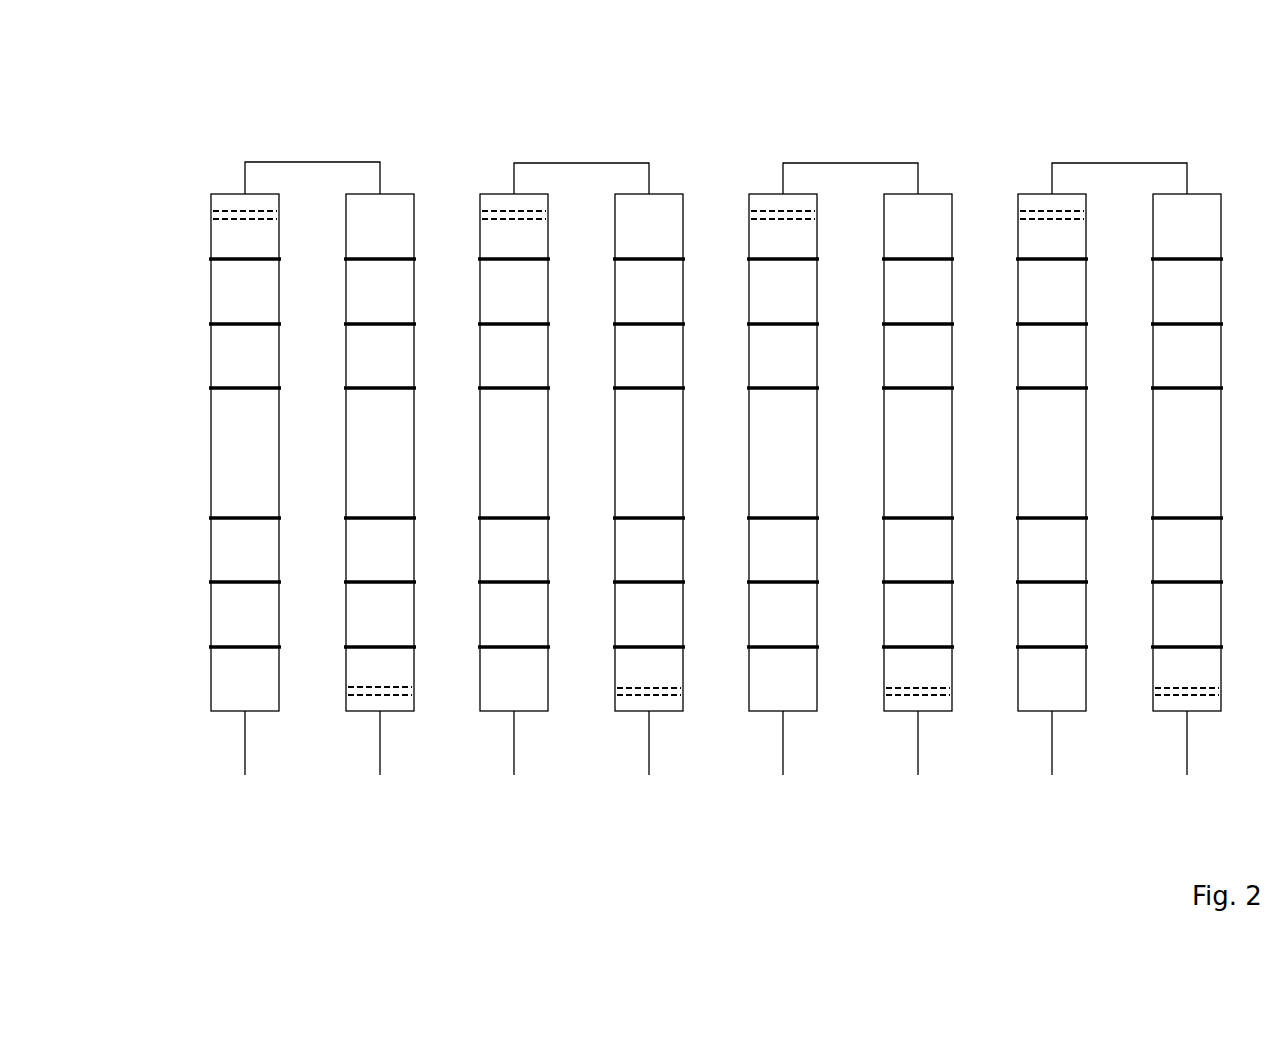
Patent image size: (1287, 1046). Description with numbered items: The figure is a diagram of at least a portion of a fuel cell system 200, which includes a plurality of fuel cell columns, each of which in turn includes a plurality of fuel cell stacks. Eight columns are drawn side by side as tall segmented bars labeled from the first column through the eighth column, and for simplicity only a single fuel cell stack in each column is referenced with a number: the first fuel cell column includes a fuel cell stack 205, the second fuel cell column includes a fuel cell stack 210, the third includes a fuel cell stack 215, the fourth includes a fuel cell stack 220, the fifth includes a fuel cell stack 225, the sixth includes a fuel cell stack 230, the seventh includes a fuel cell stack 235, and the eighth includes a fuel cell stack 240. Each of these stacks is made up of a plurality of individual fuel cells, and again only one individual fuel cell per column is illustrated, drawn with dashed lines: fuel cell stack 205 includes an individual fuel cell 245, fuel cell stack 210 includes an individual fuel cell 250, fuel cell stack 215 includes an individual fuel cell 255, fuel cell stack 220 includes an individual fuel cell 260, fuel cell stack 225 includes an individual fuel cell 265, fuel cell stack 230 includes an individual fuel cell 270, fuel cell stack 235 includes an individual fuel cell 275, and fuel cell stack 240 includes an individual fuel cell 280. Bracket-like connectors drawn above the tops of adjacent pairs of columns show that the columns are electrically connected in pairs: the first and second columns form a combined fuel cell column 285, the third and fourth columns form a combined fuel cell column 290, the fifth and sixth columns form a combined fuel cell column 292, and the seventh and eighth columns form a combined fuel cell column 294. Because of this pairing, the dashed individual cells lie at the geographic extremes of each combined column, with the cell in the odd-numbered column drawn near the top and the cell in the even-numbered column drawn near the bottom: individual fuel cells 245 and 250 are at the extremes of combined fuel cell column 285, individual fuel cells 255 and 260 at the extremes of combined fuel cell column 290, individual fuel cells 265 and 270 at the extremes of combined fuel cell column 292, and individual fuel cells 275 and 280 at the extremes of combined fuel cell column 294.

The fuel cell system 200 is at (285, 91).
The fuel cell stack 205 is at (214, 481).
The fuel cell stack 210 is at (406, 484).
The fuel cell stack 215 is at (523, 484).
The fuel cell stack 220 is at (656, 484).
The fuel cell stack 225 is at (791, 484).
The fuel cell stack 230 is at (924, 484).
The fuel cell stack 235 is at (1030, 484).
The fuel cell stack 240 is at (1164, 484).
The individual fuel cell 245 is at (212, 210).
The individual fuel cell 250 is at (412, 690).
The individual fuel cell 255 is at (548, 215).
The individual fuel cell 260 is at (615, 689).
The individual fuel cell 265 is at (749, 212).
The individual fuel cell 270 is at (884, 689).
The individual fuel cell 275 is at (1019, 215).
The individual fuel cell 280 is at (1153, 695).
The combined fuel cell column 285 is at (327, 155).
The combined fuel cell column 290 is at (586, 153).
The combined fuel cell column 292 is at (850, 153).
The combined fuel cell column 294 is at (1115, 153).